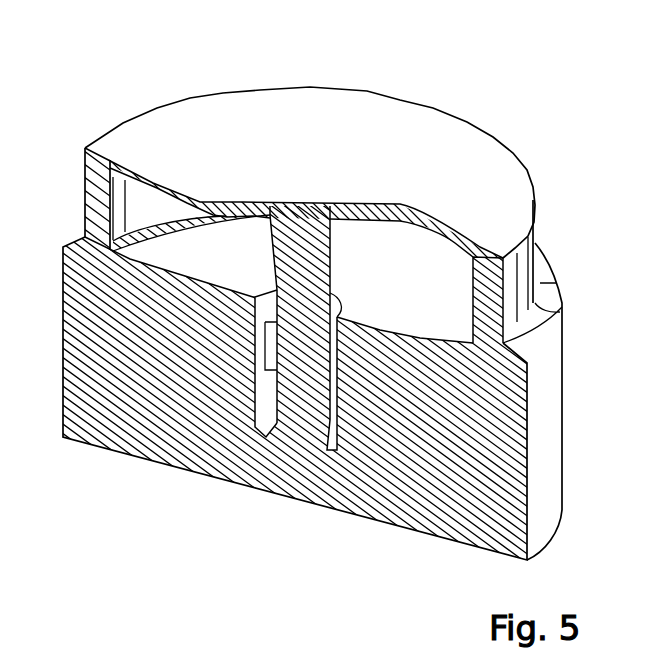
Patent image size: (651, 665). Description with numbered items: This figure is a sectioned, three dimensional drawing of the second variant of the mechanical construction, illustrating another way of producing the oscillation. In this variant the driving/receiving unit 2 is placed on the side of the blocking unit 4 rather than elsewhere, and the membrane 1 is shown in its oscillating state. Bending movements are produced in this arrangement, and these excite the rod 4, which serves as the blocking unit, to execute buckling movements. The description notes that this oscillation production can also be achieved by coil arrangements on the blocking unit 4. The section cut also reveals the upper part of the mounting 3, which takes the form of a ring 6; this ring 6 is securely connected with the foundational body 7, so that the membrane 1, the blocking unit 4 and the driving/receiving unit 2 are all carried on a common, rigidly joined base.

The membrane 1 is at (146, 84).
The driving/receiving unit 2 is at (265, 350).
The mounting 3 is at (535, 250).
The blocking unit 4 is at (312, 367).
The ring 6 is at (92, 199).
The foundational body 7 is at (63, 348).